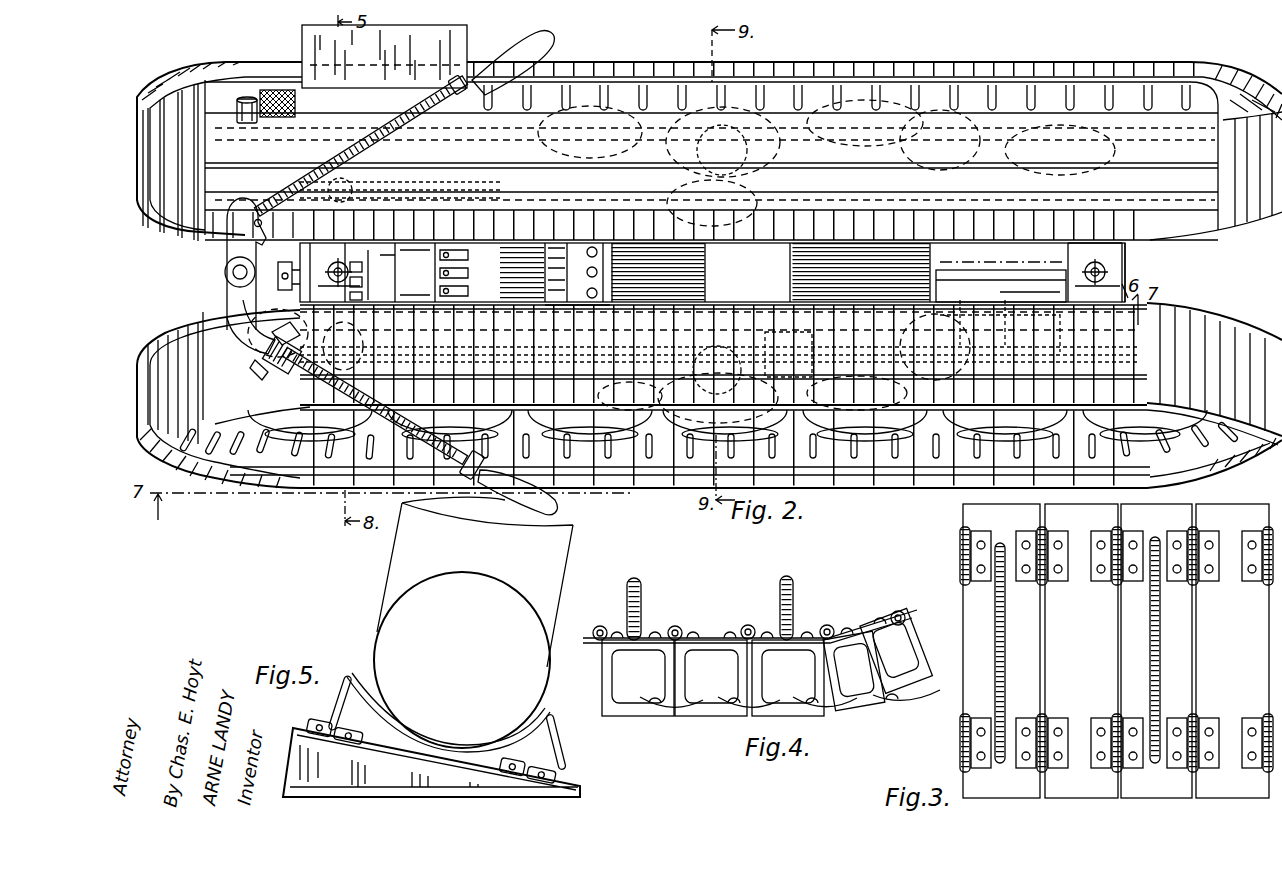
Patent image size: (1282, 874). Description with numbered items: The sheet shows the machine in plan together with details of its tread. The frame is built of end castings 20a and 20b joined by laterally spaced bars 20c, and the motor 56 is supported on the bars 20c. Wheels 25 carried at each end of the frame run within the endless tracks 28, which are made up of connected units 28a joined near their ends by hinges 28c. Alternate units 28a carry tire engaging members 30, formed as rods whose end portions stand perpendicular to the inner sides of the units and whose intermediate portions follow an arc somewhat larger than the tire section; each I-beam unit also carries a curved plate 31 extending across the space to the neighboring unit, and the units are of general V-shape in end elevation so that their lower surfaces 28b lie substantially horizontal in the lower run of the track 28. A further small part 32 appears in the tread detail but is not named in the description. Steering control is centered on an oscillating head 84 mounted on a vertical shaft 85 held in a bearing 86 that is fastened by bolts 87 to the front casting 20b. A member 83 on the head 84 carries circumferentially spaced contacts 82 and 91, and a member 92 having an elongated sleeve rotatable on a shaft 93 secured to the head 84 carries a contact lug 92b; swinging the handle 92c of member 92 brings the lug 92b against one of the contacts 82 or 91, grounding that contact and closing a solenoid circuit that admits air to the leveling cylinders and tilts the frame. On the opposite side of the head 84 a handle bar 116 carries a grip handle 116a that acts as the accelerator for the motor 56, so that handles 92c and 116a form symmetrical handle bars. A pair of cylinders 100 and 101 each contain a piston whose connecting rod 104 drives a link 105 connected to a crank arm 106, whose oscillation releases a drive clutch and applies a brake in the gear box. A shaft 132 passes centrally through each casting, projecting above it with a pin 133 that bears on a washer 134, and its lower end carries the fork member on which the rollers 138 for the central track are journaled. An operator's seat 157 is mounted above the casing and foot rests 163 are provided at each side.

In FIG. 2, the foot rests 163 is at (305, 40).
In FIG. 2, the grip handle 116a is at (535, 46).
In FIG. 2, the endless tracks 28 is at (828, 65).
In FIG. 2, the handle bar 116 is at (361, 145).
In FIG. 2, the rollers 138 is at (675, 163).
In FIG. 2, the operator's seat 157 is at (750, 185).
In FIG. 2, the oscillating head 84 is at (236, 253).
In FIG. 2, the vertical shaft 85 is at (226, 278).
In FIG. 2, the member 83 is at (228, 316).
In FIG. 2, the bearing 86 is at (282, 268).
In FIG. 2, the bolts 87 is at (332, 263).
In FIG. 2, the shaft 132 is at (716, 264).
In FIG. 2, the casting 20b is at (380, 275).
In FIG. 2, the pin 133 is at (1135, 274).
In FIG. 2, the washer 134 is at (1075, 282).
In FIG. 2, the crank arms 106 is at (421, 277).
In FIG. 2, the links 105 is at (462, 277).
In FIG. 2, the cylinder 100 is at (546, 256).
In FIG. 2, the connecting rod 104 is at (490, 273).
In FIG. 2, the cylinder 101 is at (723, 315).
In FIG. 2, the motor 56 is at (928, 258).
In FIG. 2, the casting 20a is at (1122, 256).
In FIG. 2, the bars 20c is at (992, 286).
In FIG. 2, the contacts 82 is at (310, 333).
In FIG. 2, the contacts 91 is at (255, 376).
In FIG. 2, the contact lug 92b is at (281, 370).
In FIG. 2, the tire engaging members 30 is at (332, 412).
In FIG. 5, the tire engaging members 30 is at (548, 710).
In FIG. 4, the tire engaging members 30 is at (780, 583).
In FIG. 3, the tire engaging members 30 is at (1008, 620).
In FIG. 2, the member 92 is at (408, 476).
In FIG. 2, the shaft 93 is at (465, 481).
In FIG. 2, the handle 92c is at (540, 503).
In FIG. 5, the wheels 25 is at (575, 535).
In FIG. 5, the hinges 28c is at (566, 760).
In FIG. 4, the hinges 28c is at (745, 627).
In FIG. 3, the hinges 28c is at (1052, 588).
In FIG. 5, the lower surfaces 28b is at (572, 790).
In FIG. 3, the units 28a is at (1201, 501).
In FIG. 4, the pin 32 is at (655, 696).
In FIG. 4, the curved plate 31 is at (687, 700).